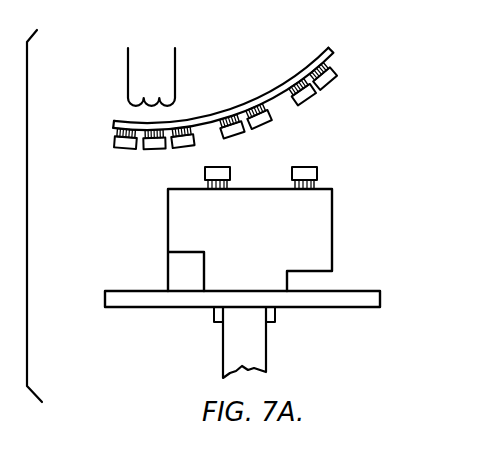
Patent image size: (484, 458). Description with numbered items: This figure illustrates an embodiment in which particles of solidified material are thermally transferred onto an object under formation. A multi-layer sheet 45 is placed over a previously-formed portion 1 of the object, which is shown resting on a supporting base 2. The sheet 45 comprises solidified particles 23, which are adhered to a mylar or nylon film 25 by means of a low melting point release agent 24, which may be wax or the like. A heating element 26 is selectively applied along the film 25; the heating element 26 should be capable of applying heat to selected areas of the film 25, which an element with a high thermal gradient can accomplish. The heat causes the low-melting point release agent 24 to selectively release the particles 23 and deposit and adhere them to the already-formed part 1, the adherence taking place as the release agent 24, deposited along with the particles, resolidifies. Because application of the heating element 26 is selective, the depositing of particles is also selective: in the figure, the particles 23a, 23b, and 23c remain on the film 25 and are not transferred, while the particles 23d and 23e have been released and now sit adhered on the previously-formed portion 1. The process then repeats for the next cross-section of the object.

The previously-formed portion of an object 1 is at (332, 228).
The support plate 2 is at (350, 291).
The solidified particles 23 is at (98, 142).
The particle 23a is at (128, 148).
The particle 23b is at (152, 150).
The particle 23c is at (180, 148).
The particle 23d is at (232, 168).
The particle 23e is at (317, 170).
The low melting point release agent 24 is at (113, 130).
The film 25 is at (113, 125).
The heating element 26 is at (176, 62).
The multi-layer sheet 45 is at (342, 53).